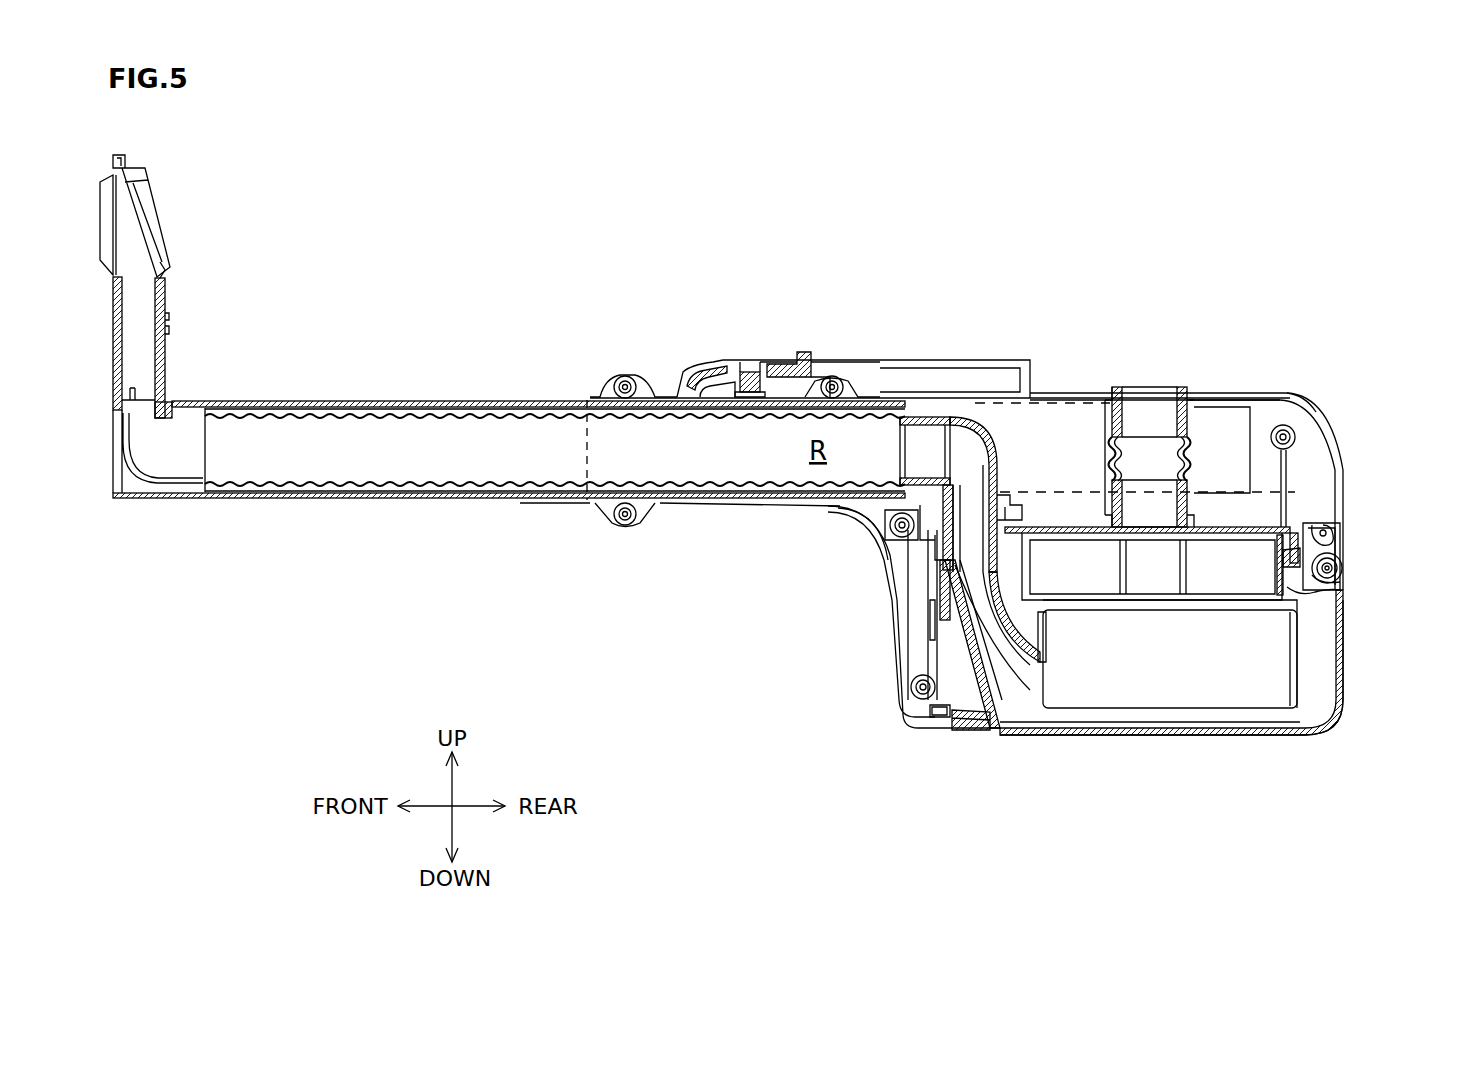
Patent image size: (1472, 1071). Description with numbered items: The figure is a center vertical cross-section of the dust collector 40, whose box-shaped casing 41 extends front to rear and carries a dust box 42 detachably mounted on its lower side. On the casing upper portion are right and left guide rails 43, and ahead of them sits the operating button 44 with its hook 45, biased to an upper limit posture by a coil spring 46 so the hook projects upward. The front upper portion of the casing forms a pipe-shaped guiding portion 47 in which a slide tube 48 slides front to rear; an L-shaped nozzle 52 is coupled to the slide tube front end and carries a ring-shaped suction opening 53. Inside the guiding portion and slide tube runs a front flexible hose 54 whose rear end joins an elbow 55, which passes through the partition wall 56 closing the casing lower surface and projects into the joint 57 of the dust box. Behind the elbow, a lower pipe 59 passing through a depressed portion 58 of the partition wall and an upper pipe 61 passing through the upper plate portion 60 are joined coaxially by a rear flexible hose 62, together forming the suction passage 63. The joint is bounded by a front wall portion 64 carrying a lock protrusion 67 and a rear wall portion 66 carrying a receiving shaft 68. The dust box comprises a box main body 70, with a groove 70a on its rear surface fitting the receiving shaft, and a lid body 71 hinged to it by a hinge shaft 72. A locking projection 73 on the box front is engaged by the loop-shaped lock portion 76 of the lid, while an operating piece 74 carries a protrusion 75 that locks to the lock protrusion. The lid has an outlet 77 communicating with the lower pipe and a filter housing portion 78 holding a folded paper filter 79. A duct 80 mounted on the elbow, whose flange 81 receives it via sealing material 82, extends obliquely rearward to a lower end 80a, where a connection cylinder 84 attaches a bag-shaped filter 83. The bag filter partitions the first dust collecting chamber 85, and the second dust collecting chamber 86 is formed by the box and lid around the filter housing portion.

The dust collector 40 is at (1140, 265).
The casing 41 is at (1308, 382).
The dust box 42 is at (1218, 755).
The guide rails 43 is at (975, 360).
The operating button 44 is at (727, 366).
The hook 45 is at (799, 350).
The coil spring 46 is at (762, 372).
The guiding portion 47 is at (656, 388).
The slide tube 48 is at (398, 401).
The nozzle 52 is at (170, 291).
The suction opening 53 is at (148, 220).
The front flexible hose 54 is at (393, 499).
The elbow 55 is at (990, 425).
The partition wall 56 is at (1264, 398).
The joint 57 is at (935, 645).
The depressed portion 58 is at (1184, 540).
The lower pipe 59 is at (1152, 566).
The upper plate portion 60 is at (1236, 396).
The upper pipe 61 is at (1150, 395).
The rear flexible hose 62 is at (1108, 445).
The suction passage 63 is at (1170, 440).
The front wall portion 64 is at (895, 598).
The rear wall portion 66 is at (1345, 546).
The lock protrusion 67 is at (937, 718).
The receiving shaft 68 is at (1342, 568).
The box main body 70 is at (1300, 740).
The groove 70a is at (1340, 585).
The lid body 71 is at (1256, 525).
The hinge shaft 72 is at (1335, 527).
The locking projection 73 is at (945, 575).
The operating piece 74 is at (975, 730).
The protrusion 75 is at (935, 703).
The lock portion 76 is at (935, 610).
The outlet 77 is at (1128, 540).
The filter housing portion 78 is at (1342, 600).
The filter 79 is at (1258, 612).
The duct 80 is at (1000, 630).
The lower end 80a is at (1040, 645).
The flange 81 is at (937, 445).
The sealing material 82 is at (1022, 505).
The bag-shaped filter 83 is at (1170, 736).
The connection cylinder 84 is at (1040, 660).
The first dust collecting chamber 85 is at (1170, 659).
The second dust collecting chamber 86 is at (1315, 659).